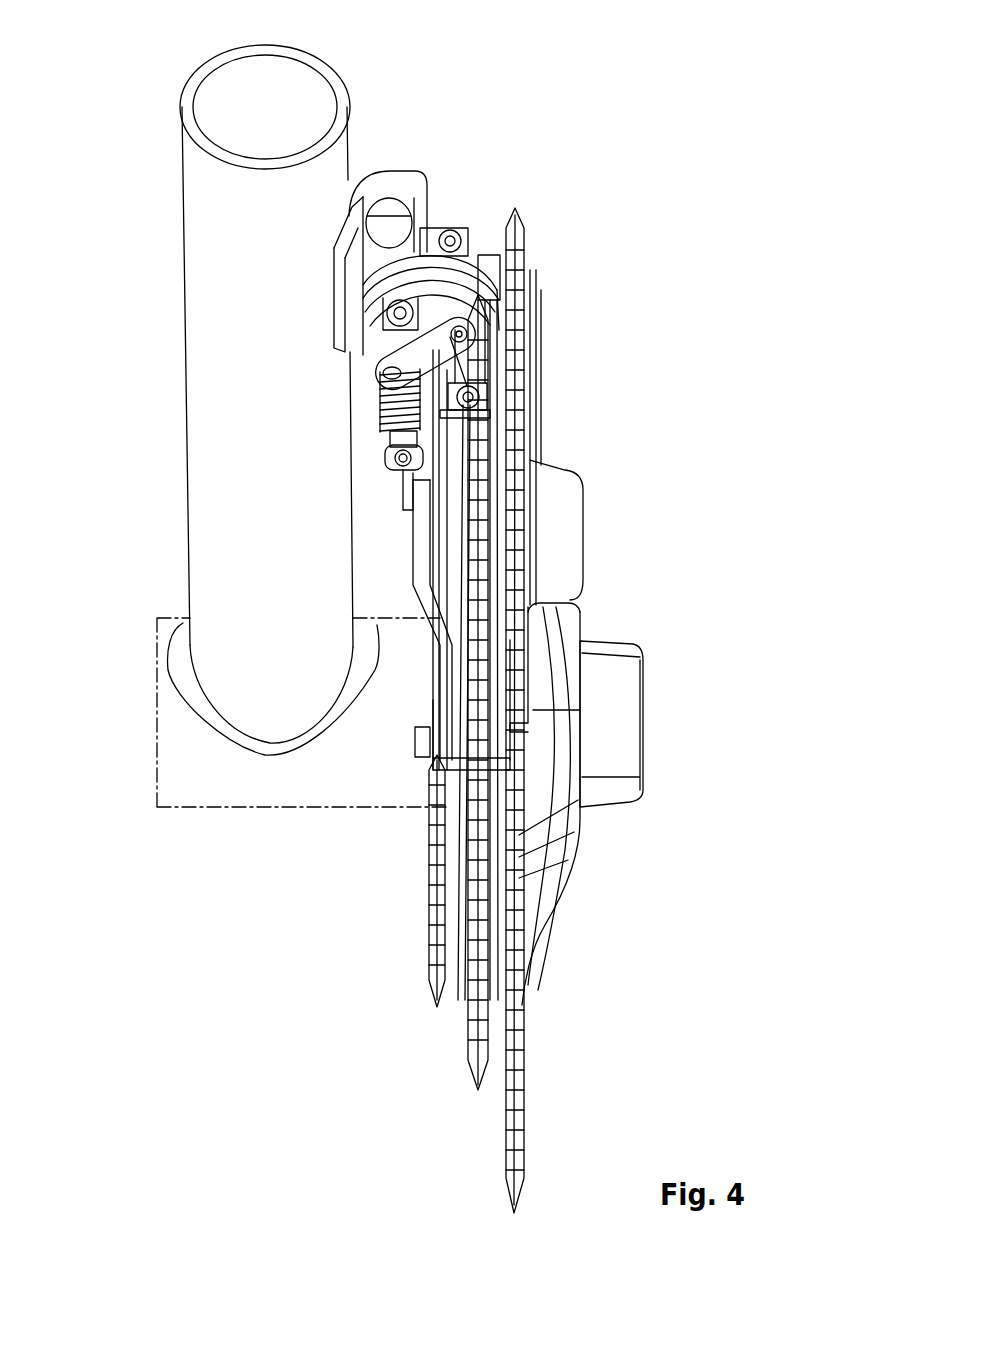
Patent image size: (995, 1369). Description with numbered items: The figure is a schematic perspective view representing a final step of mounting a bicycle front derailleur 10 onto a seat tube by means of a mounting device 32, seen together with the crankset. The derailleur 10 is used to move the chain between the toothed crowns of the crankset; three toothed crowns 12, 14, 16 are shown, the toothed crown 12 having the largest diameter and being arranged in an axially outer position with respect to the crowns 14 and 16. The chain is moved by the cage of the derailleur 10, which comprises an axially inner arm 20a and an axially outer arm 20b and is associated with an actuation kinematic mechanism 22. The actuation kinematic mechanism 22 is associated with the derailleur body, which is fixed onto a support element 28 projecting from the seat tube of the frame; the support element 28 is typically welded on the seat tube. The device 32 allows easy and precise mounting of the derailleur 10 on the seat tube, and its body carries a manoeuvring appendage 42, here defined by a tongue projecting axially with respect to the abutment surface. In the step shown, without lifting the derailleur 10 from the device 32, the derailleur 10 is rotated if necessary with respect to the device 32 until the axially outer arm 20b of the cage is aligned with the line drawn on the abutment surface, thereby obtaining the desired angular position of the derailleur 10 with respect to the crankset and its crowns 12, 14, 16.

The front derailleur 10 is at (470, 218).
The toothed crown 12 is at (523, 1137).
The toothed crown 14 is at (473, 1070).
The toothed crown 16 is at (435, 962).
The axially inner arm 20a is at (413, 577).
The axially outer arm 20b is at (415, 485).
The actuation kinematic mechanism 22 is at (459, 337).
The support element 28 is at (352, 191).
The device 32 is at (474, 645).
The manoeuvring appendage 42 is at (558, 540).